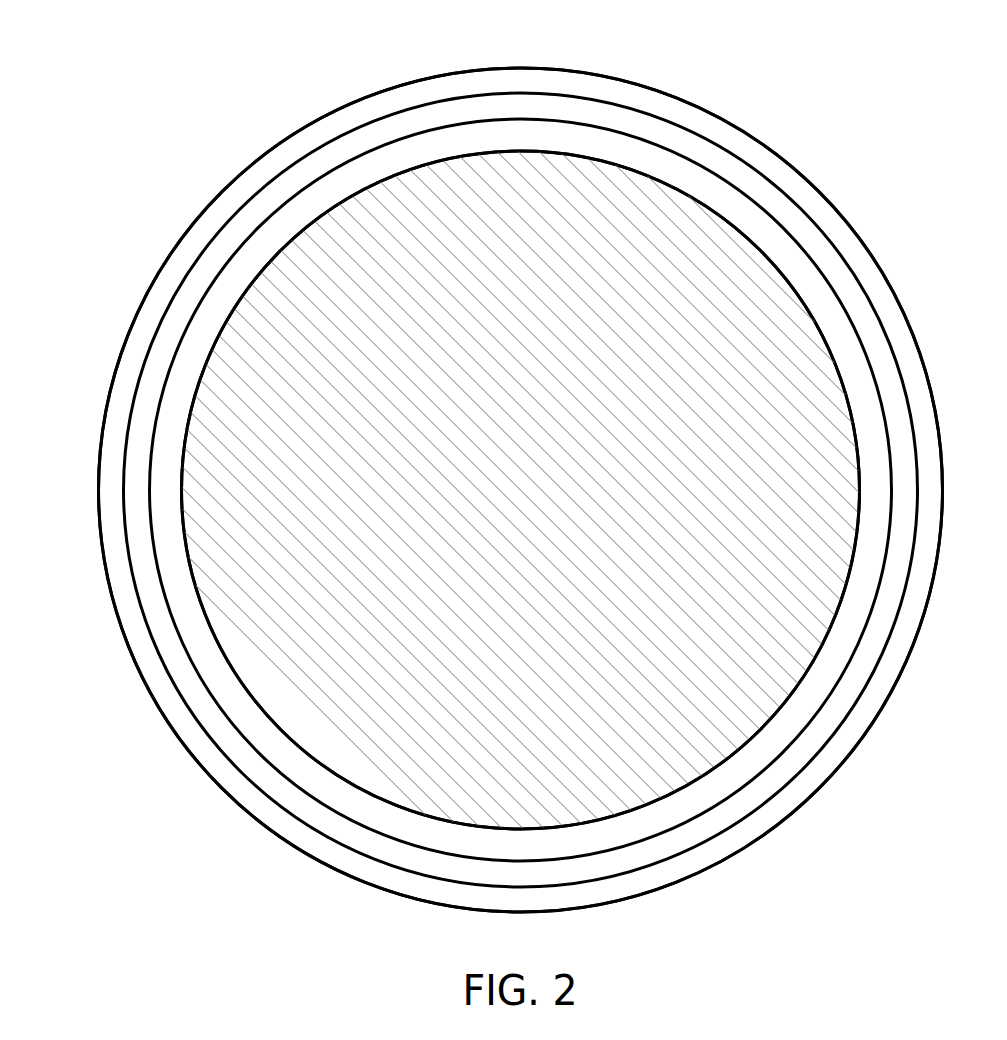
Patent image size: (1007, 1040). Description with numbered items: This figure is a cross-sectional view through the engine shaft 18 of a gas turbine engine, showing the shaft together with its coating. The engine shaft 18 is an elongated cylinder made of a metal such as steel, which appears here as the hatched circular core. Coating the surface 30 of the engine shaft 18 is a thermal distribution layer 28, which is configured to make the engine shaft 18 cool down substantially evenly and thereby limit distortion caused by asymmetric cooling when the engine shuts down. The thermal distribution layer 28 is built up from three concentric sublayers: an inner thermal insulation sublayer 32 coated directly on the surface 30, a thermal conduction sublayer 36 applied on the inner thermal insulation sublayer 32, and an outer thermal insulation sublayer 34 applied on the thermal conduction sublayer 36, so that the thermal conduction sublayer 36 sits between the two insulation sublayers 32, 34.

The thermal distribution layer 28 is at (208, 770).
The engine shaft 18 is at (573, 183).
The surface 30 is at (521, 148).
The inner thermal insulation sublayer 32 is at (288, 210).
The thermal conduction sublayer 36 is at (152, 363).
The outer thermal insulation sublayer 34 is at (98, 483).